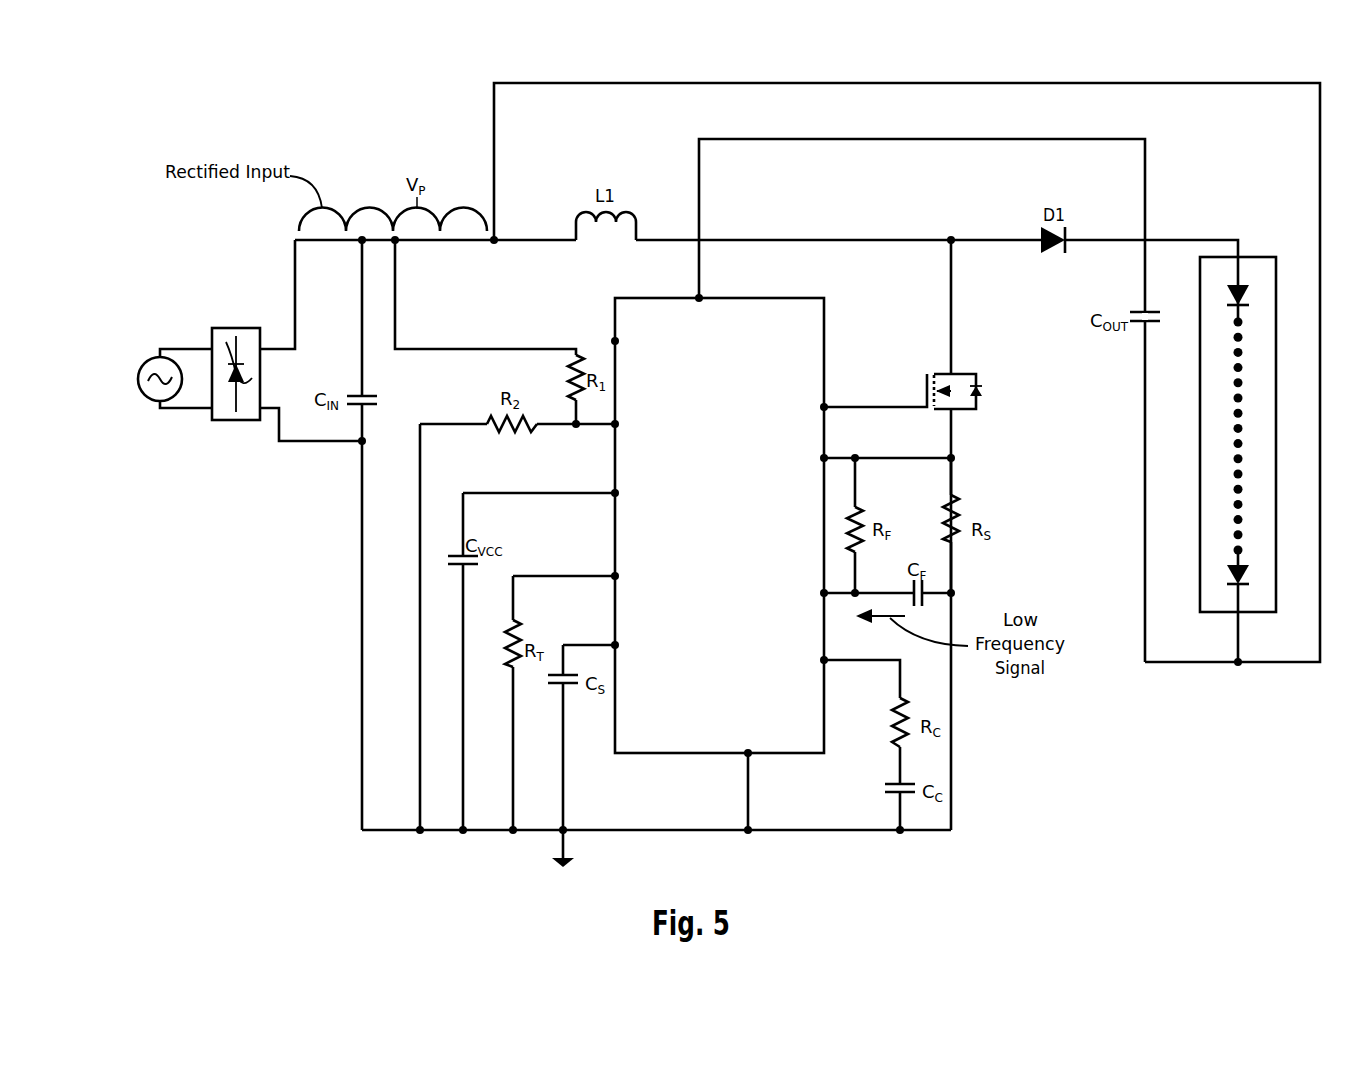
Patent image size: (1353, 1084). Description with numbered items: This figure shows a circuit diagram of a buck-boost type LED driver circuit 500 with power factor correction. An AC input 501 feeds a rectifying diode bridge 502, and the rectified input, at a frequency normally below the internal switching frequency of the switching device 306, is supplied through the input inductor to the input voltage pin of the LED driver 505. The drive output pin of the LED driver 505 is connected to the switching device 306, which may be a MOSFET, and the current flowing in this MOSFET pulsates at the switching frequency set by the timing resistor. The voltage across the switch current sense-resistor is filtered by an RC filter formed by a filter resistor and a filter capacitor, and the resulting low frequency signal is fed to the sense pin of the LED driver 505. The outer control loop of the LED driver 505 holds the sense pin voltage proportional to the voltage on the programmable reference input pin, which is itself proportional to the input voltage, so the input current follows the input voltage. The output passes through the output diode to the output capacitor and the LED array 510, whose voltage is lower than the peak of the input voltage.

The LED driver circuit 500 is at (453, 119).
The AC input 501 is at (147, 364).
The bridge 502 is at (212, 328).
The LED driver 505 is at (756, 298).
The switching device 306 is at (966, 374).
The LED array 510 is at (1255, 388).